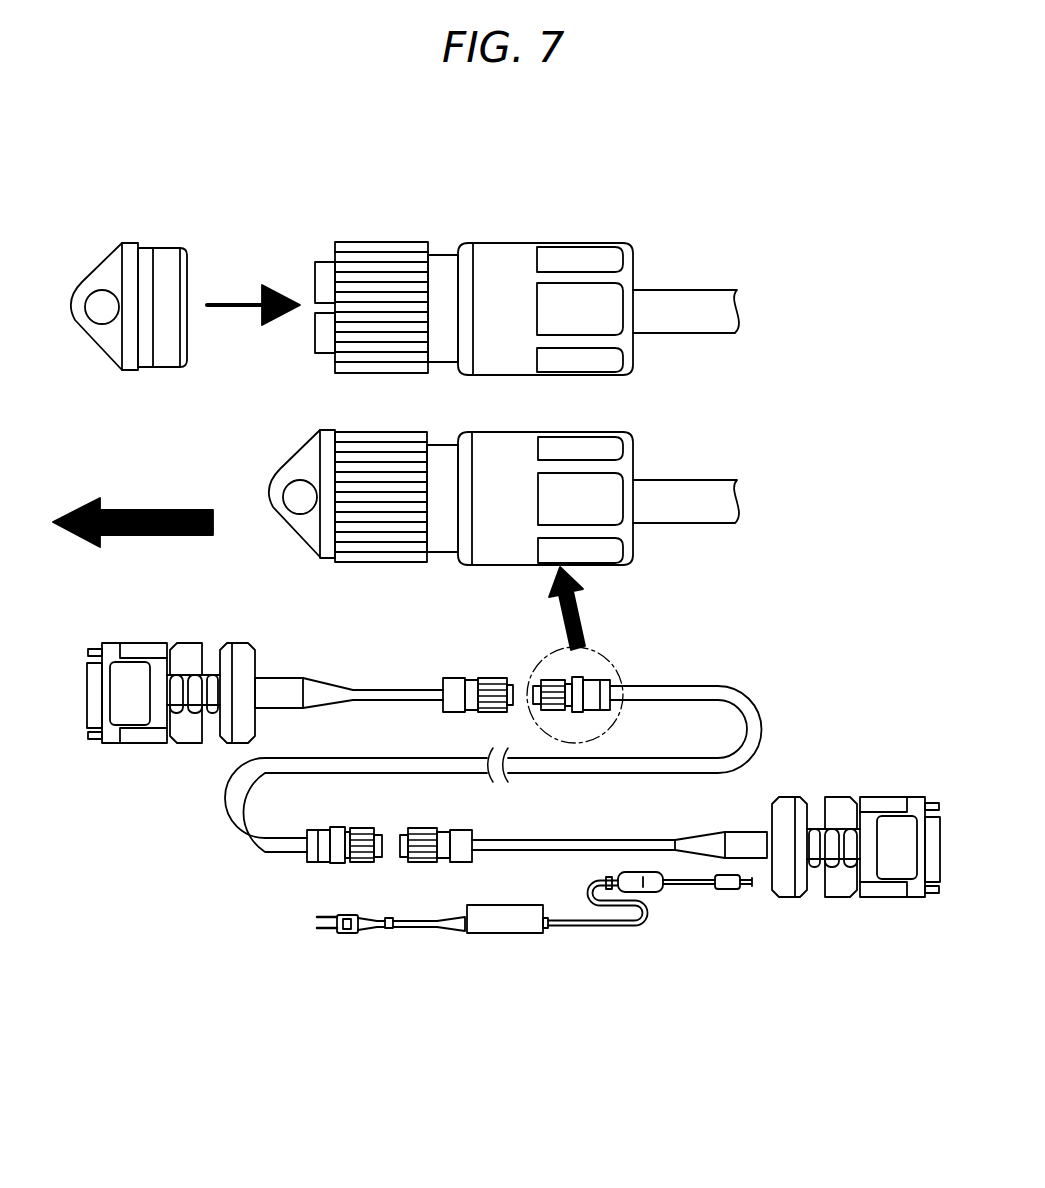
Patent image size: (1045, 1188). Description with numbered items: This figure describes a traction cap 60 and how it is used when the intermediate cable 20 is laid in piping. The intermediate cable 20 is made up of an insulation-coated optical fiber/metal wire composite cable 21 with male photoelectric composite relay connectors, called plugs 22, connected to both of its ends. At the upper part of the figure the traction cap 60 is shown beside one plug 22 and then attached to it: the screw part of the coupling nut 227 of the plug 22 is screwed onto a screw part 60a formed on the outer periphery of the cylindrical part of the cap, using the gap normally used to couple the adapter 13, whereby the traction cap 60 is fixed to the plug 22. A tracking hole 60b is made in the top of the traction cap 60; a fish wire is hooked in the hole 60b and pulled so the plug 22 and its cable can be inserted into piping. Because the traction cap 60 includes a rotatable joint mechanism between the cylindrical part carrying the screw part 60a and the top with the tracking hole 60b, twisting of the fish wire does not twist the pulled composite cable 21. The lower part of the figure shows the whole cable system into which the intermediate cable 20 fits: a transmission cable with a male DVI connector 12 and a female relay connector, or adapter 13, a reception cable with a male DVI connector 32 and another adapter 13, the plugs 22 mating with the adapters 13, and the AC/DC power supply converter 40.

The male DVI connector 12 is at (125, 745).
The female photoelectric composite relay connector 13 is at (488, 678).
The intermediate cable 20 is at (537, 537).
The composite cable 21 is at (705, 290).
The male photoelectric composite relay connector 22 is at (465, 547).
The male DVI connector 32 is at (882, 898).
The AC/DC power supply converter 40 is at (512, 933).
The traction cap 60 is at (194, 400).
The screw part 60a is at (165, 248).
The tracking hole 60b is at (101, 310).
The coupling nut 227 is at (378, 240).